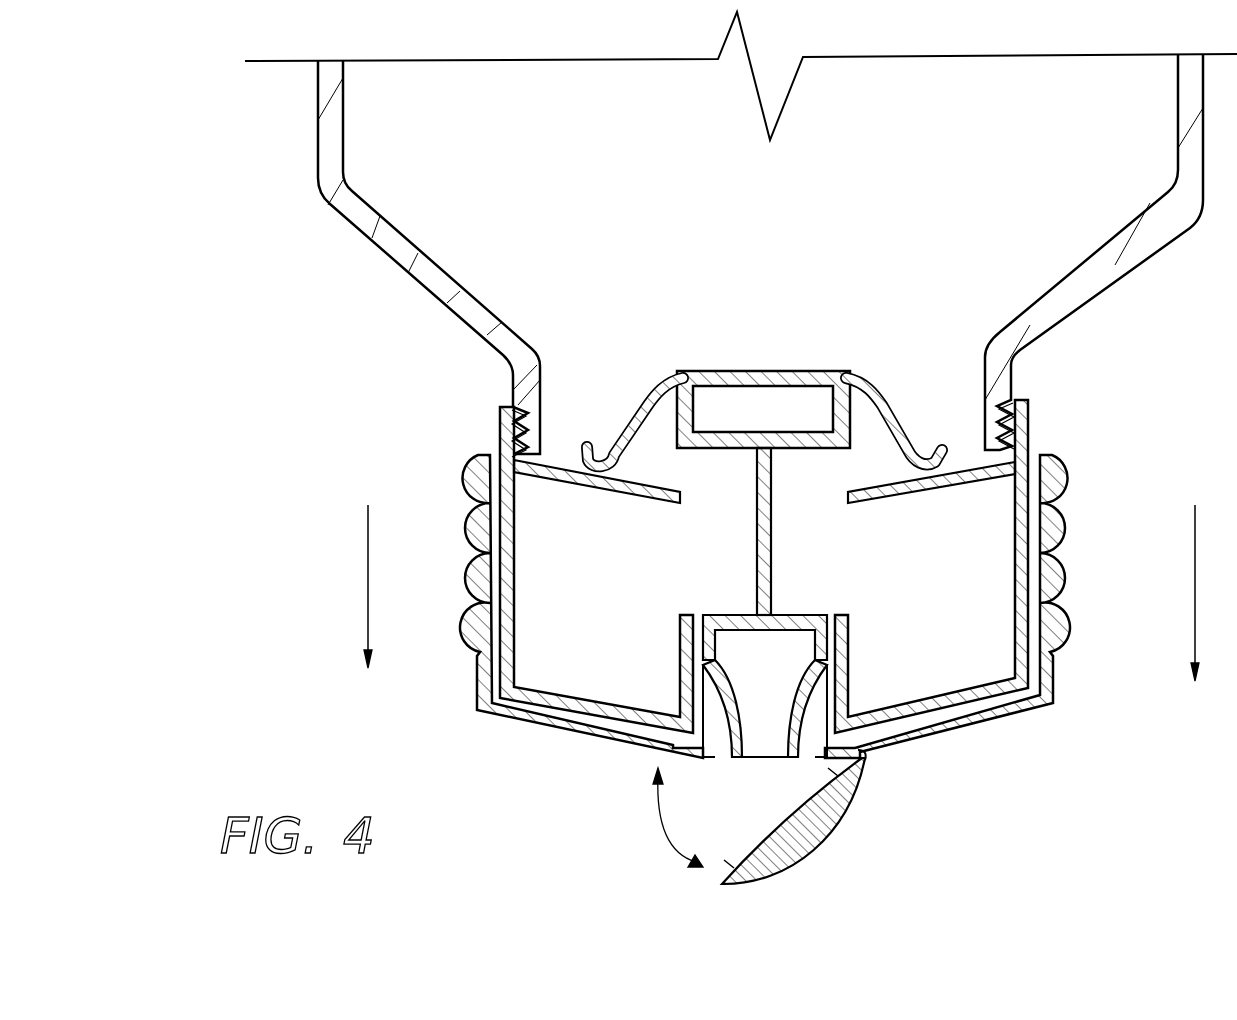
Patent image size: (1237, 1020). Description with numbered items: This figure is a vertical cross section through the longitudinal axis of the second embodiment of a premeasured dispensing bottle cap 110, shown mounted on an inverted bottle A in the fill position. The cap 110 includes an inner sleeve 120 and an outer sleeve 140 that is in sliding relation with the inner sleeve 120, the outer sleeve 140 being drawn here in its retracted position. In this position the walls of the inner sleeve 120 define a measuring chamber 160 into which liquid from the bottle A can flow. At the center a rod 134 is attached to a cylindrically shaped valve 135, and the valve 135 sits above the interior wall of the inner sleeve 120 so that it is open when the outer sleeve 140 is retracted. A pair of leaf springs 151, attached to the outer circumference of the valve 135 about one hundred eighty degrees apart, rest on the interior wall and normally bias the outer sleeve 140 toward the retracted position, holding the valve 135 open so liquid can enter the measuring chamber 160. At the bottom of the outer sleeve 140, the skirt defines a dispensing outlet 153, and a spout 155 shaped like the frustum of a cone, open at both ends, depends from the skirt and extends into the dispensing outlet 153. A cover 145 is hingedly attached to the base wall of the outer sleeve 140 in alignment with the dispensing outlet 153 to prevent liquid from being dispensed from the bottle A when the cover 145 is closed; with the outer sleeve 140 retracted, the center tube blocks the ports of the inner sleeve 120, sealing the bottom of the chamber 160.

The bottle A is at (317, 170).
The cap 110 is at (428, 727).
The inner sleeve 120 is at (498, 425).
The rod 134 is at (757, 566).
The valve 135 is at (733, 371).
The outer sleeve 140 is at (1053, 677).
The cover 145 is at (777, 866).
The leaf springs 151 is at (898, 400).
The dispensing outlet 153 is at (720, 780).
The spout 155 is at (782, 757).
The measuring chamber 160 is at (603, 607).